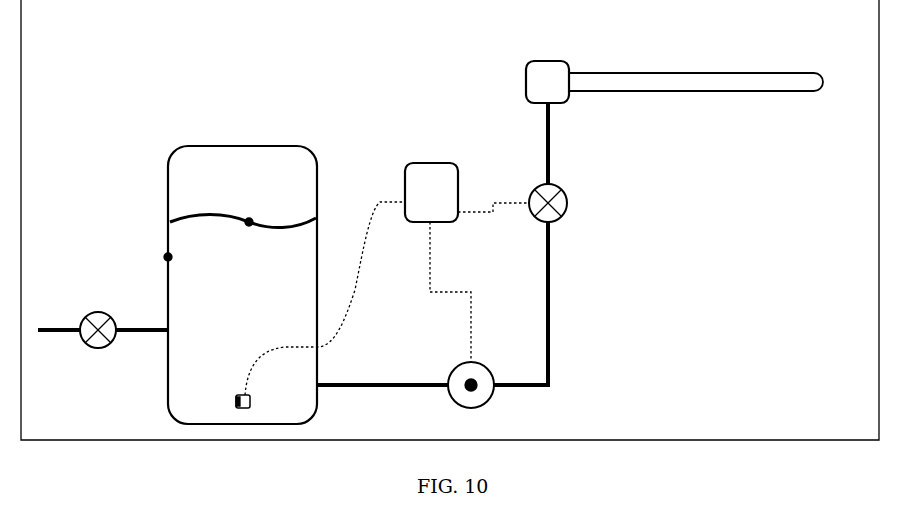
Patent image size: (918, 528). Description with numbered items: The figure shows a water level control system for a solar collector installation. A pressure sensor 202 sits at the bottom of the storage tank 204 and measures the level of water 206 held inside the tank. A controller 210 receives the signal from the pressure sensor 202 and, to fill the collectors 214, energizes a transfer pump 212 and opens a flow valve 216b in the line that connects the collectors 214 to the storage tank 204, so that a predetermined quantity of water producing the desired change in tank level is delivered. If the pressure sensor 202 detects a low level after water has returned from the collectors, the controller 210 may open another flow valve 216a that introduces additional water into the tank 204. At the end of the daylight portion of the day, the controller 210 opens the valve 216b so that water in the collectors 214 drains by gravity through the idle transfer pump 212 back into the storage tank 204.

The pressure sensor 202 is at (236, 402).
The storage tank 204 is at (166, 256).
The water 206 is at (251, 221).
The controller 210 is at (479, 159).
The transfer pump 212 is at (525, 416).
The collectors 214 is at (670, 53).
The flow valve 216a is at (90, 303).
The flow valve 216b is at (617, 193).